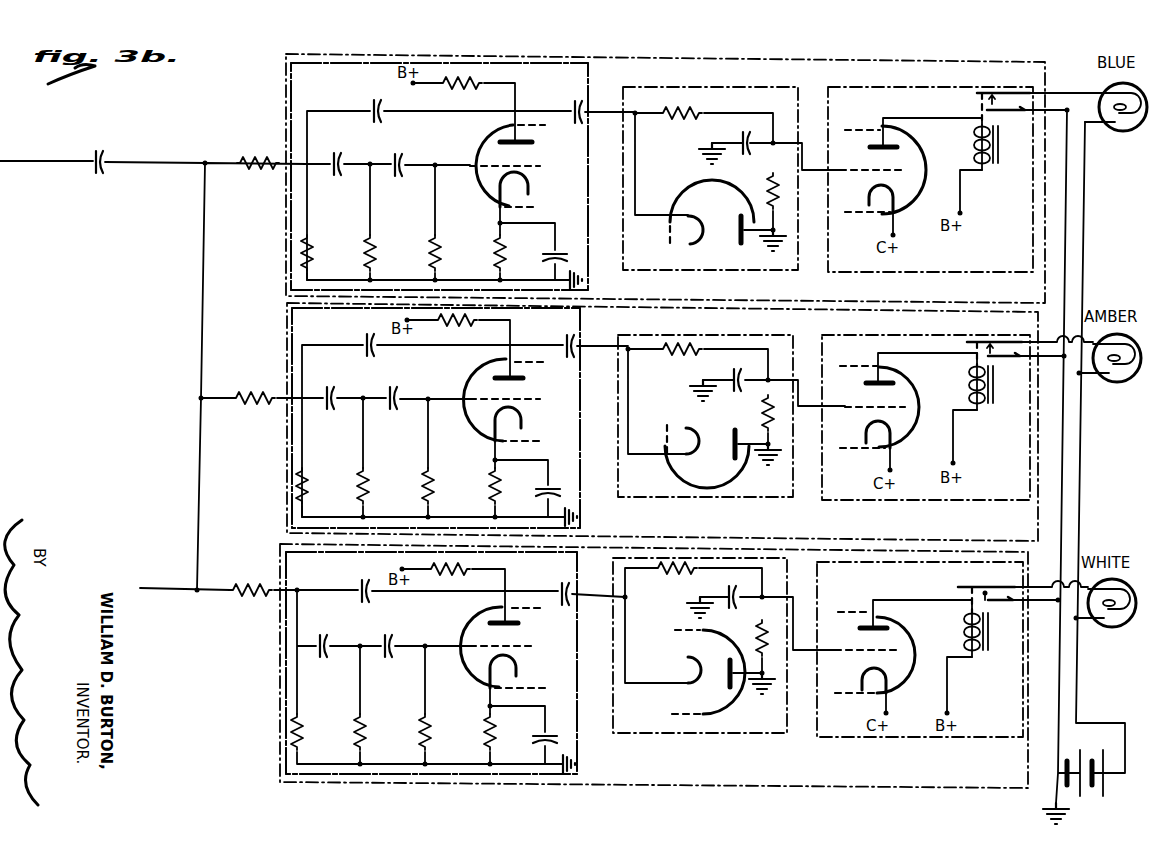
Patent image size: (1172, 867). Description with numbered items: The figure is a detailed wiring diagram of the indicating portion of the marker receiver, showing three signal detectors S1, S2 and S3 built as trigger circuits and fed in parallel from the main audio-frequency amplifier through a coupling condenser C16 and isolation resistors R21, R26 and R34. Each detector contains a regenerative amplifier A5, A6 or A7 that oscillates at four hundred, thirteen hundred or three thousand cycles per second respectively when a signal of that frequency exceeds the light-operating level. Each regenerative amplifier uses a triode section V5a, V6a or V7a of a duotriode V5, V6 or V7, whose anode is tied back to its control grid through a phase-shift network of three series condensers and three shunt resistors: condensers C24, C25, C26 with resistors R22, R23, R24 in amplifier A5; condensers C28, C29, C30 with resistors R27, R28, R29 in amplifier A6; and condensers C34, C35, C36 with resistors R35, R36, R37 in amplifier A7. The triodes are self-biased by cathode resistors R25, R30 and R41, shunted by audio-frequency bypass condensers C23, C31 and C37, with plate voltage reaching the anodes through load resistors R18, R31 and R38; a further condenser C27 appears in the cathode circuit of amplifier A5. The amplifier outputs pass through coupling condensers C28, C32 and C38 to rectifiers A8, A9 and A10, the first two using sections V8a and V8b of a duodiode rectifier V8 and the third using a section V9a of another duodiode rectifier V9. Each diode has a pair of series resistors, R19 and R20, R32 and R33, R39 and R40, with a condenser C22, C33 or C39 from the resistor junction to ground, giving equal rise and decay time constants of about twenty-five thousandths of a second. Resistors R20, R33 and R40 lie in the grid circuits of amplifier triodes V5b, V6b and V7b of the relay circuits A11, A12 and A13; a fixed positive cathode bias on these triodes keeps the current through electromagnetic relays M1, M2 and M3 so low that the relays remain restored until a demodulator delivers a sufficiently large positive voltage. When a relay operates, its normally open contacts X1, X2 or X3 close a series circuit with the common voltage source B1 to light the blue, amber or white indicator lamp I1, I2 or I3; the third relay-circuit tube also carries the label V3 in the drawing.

The coupling condenser C16 is at (115, 155).
The isolation resistor R21 is at (254, 166).
The signal detector S1 is at (281, 74).
The regenerative amplifier A5 is at (598, 74).
The series condenser C24 is at (374, 105).
The audio-frequency bypass condenser C23 is at (576, 100).
The load resistor R18 is at (484, 86).
The series condenser C25 is at (334, 176).
The series condenser C26 is at (398, 176).
The triode section V5a is at (482, 140).
The duotriode V5 is at (535, 208).
The shunt resistor R22 is at (312, 246).
The shunt resistor R23 is at (375, 246).
The shunt resistor R24 is at (440, 246).
The self-bias resistor R25 is at (505, 247).
The cathode bypass capacitor C27 is at (540, 251).
The rectifier A8 is at (737, 81).
The resistor R19 is at (670, 118).
The condenser C22 is at (744, 152).
The resistor R20 is at (786, 200).
The duodiode rectifier section V8a is at (690, 198).
The duodiode rectifier V8 is at (668, 246).
The relay circuit A11 is at (864, 81).
The amplifier tube section V5b is at (915, 150).
The electromagnetic relay M1 is at (986, 168).
The relay contacts X1 is at (975, 93).
The indicator lamp I1 is at (1114, 132).
The voltage source B1 is at (1104, 792).
The signal detector S2 is at (280, 322).
The regenerative amplifier A6 is at (598, 328).
The isolation resistor R26 is at (250, 404).
The series condenser C28 is at (378, 354).
The coupling condenser C32 is at (566, 341).
The load resistor R31 is at (476, 322).
The series condenser C29 is at (328, 410).
The series condenser C30 is at (393, 410).
The triode section V6a is at (480, 377).
The duotriode V6 is at (531, 441).
The shunt resistor R27 is at (306, 474).
The shunt resistor R28 is at (368, 474).
The shunt resistor R29 is at (433, 474).
The self-bias resistor R30 is at (500, 483).
The audio-frequency bypass condenser C31 is at (536, 488).
The rectifier A9 is at (774, 329).
The resistor R32 is at (666, 352).
The condenser C33 is at (734, 375).
The resistor R33 is at (760, 406).
The duodiode rectifier section V8b is at (680, 472).
The relay circuit A12 is at (864, 330).
The amplifier tube section V6b is at (905, 392).
The electromagnetic relay M2 is at (978, 414).
The relay contacts X2 is at (995, 360).
The indicator lamp I2 is at (1112, 383).
The signal detector S3 is at (277, 727).
The regenerative amplifier A7 is at (583, 764).
The isolation resistor R34 is at (248, 600).
The series condenser C34 is at (361, 602).
The coupling condenser C38 is at (563, 586).
The load resistor R38 is at (470, 570).
The series condenser C35 is at (318, 658).
The series condenser C36 is at (383, 658).
The triode section V7a is at (480, 623).
The duotriode V7 is at (532, 610).
The shunt resistor R35 is at (302, 720).
The shunt resistor R36 is at (365, 720).
The shunt resistor R37 is at (430, 720).
The self-bias resistor R41 is at (496, 735).
The audio-frequency bypass condenser C37 is at (552, 739).
The rectifier A10 is at (739, 739).
The resistor R39 is at (666, 572).
The condenser C39 is at (730, 597).
The resistor R40 is at (762, 615).
The diode section of tube V9 V9a is at (717, 683).
The duodiode rectifier V9 is at (672, 714).
The relay circuit A13 is at (869, 741).
The amplifier tube section V7b is at (902, 641).
The vacuum tube V3 is at (856, 610).
The electromagnetic relay M3 is at (976, 660).
The relay contacts X3 is at (958, 587).
The indicator lamp I3 is at (1106, 630).